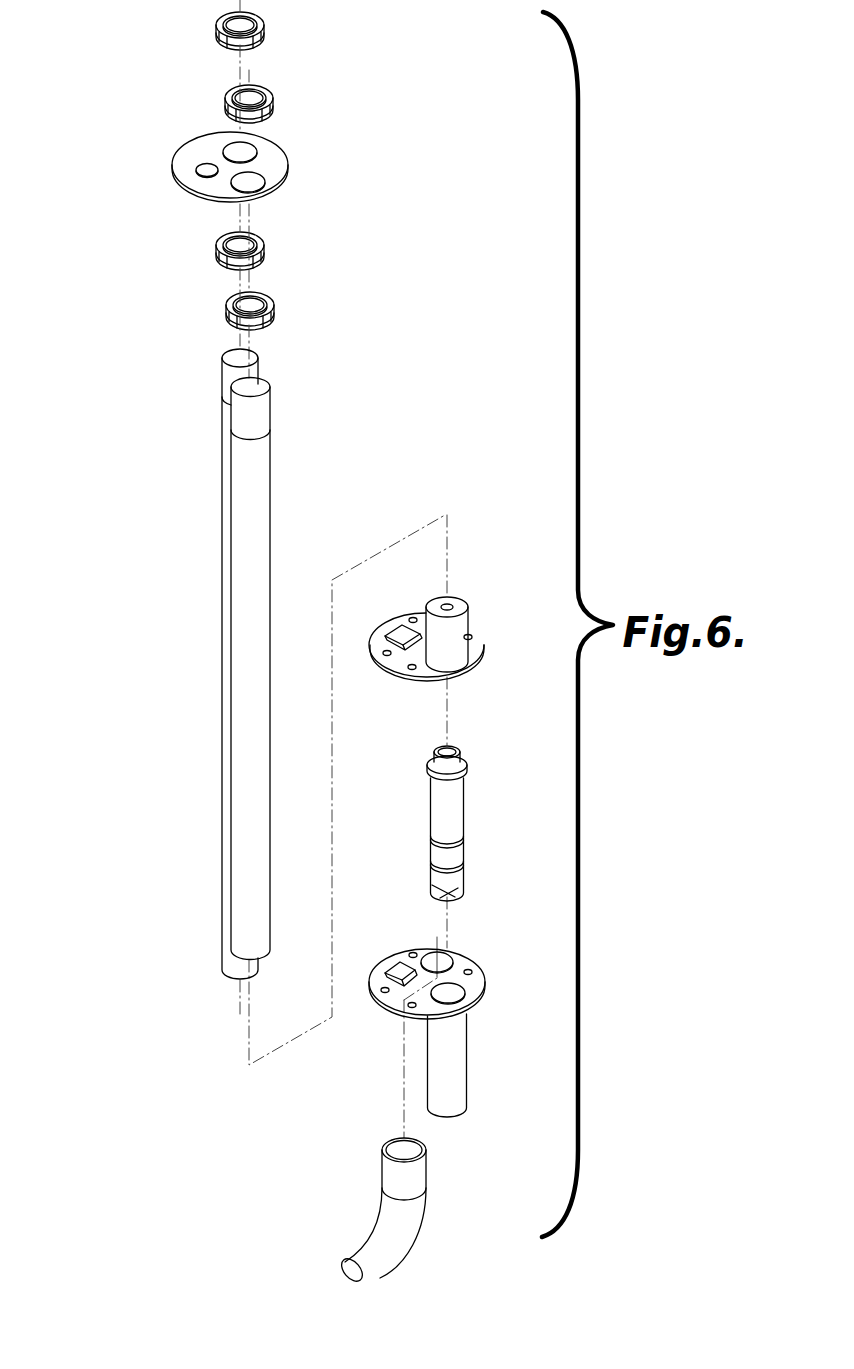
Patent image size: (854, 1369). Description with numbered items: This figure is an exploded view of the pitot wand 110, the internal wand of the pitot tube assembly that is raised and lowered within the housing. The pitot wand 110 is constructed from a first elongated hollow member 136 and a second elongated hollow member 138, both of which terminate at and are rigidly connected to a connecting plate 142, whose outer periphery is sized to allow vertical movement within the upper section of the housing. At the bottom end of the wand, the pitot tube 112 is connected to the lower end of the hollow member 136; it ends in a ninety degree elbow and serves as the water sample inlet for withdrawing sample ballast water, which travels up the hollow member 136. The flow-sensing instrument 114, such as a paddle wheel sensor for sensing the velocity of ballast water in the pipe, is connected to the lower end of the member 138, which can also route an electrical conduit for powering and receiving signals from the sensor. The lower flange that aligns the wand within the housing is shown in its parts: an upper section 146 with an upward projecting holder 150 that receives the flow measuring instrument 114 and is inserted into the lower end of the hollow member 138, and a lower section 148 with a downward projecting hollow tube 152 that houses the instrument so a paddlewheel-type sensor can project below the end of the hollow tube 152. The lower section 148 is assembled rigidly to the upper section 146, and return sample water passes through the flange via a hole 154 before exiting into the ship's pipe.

The pitot wand 110 is at (119, 327).
The pitot tube 112 is at (418, 1208).
The flow-sensing instrument 114 is at (459, 814).
The first elongated hollow member 136 is at (226, 463).
The second elongated hollow member 138 is at (236, 523).
The connecting plate 142 is at (288, 160).
The upper section 146 is at (484, 645).
The lower section 148 is at (483, 972).
The upward projecting holder 150 is at (468, 603).
The downward projecting hollow tube 152 is at (460, 1051).
The hole 154 is at (396, 965).